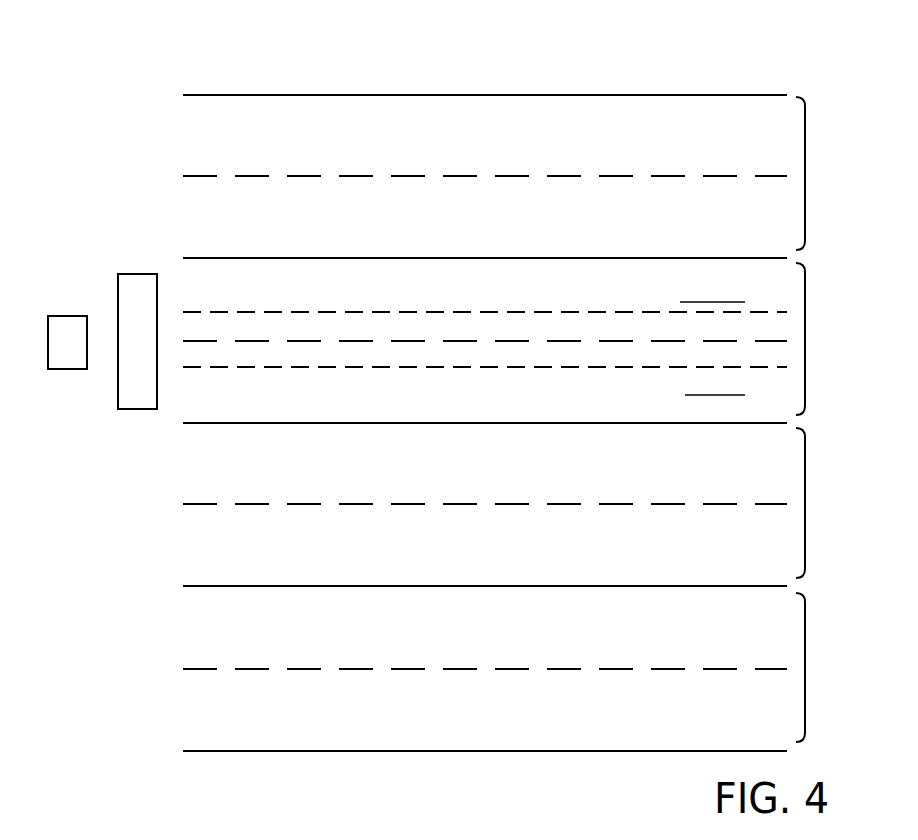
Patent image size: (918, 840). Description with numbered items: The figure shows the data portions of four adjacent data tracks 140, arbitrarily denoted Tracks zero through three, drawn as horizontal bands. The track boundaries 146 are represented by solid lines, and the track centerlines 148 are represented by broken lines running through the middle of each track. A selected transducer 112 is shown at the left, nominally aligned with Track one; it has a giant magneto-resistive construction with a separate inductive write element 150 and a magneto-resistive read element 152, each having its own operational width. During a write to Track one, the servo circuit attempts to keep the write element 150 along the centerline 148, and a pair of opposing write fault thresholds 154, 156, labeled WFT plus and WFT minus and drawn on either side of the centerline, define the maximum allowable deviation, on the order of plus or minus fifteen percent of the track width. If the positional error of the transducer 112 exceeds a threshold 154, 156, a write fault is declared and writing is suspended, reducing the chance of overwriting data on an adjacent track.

The transducer 112 is at (75, 273).
The track layout 140 is at (276, 44).
The track boundaries 146 is at (544, 95).
The track centerlines 148 is at (349, 176).
The write element 150 is at (137, 274).
The read element 152 is at (68, 369).
The write fault threshold (WFT+) 154 is at (332, 312).
The write fault threshold (WFT-) 156 is at (378, 367).